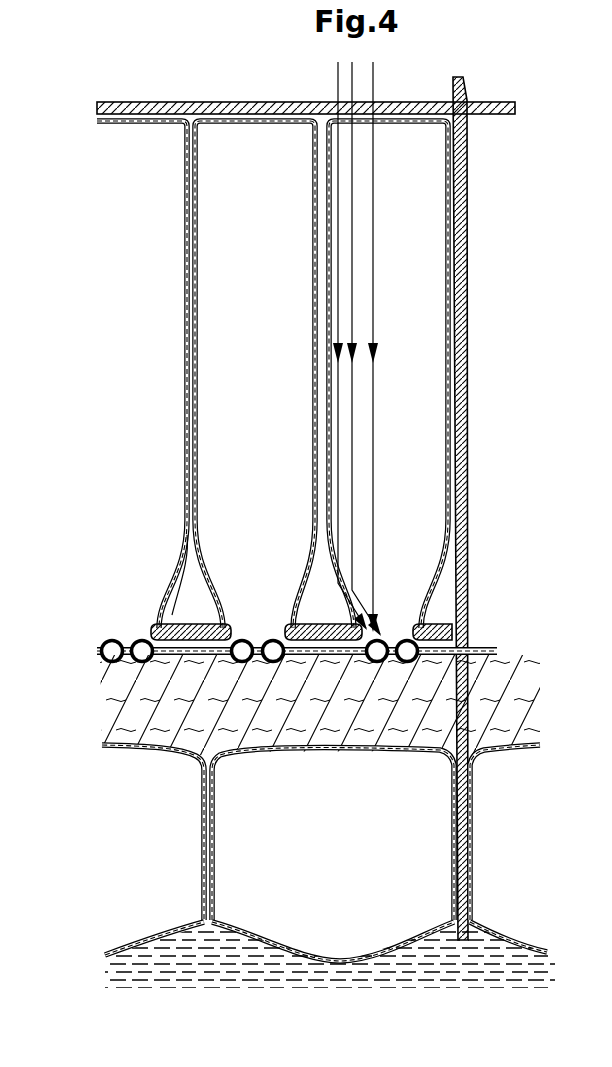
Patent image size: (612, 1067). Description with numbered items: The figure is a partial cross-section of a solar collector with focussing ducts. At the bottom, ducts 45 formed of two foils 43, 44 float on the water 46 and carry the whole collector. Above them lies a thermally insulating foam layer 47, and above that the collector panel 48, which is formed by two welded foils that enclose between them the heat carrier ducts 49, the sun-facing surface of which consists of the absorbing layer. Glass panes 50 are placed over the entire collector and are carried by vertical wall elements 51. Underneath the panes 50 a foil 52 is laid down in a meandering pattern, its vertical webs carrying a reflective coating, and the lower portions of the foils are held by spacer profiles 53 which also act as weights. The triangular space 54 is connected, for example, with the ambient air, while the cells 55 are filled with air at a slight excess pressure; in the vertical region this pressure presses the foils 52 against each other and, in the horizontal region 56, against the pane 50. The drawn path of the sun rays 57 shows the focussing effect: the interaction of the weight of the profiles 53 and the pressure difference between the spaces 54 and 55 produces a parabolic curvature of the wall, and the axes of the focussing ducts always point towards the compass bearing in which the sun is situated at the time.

The foil 43 is at (135, 948).
The foil 44 is at (203, 852).
The ducts 45 is at (338, 866).
The water 46 is at (112, 972).
The thermally insulating foam layer 47 is at (120, 700).
The collector panel 48 is at (470, 648).
The heat carrier ducts 49 is at (274, 640).
The glass panes 50 is at (150, 101).
The vertical wall elements 51 is at (468, 212).
The foil 52 is at (184, 262).
The spacer profiles 53 is at (182, 630).
The triangular space 54 is at (192, 598).
The cells 55 is at (154, 401).
The horizontal region 56 is at (240, 118).
The sun rays 57 is at (376, 497).